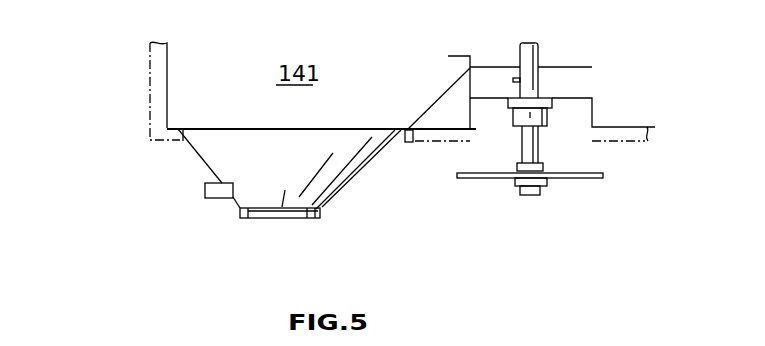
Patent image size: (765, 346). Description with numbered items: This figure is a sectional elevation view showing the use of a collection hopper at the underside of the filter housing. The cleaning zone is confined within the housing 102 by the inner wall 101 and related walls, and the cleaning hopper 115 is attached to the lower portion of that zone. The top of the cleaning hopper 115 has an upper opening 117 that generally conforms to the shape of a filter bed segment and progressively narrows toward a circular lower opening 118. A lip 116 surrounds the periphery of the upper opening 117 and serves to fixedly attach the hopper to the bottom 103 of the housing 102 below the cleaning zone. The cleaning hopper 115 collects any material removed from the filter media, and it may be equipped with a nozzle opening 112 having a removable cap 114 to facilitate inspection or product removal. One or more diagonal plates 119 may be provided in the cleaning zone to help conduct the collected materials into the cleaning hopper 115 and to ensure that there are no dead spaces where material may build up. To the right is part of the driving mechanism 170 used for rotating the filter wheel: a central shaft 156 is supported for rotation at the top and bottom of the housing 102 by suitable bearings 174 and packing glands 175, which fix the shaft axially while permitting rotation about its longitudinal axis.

The inner wall 101 is at (466, 64).
The housing 102 is at (168, 74).
The bottom of the housing 103 is at (156, 92).
The nozzle opening 112 is at (220, 198).
The removable cap 114 is at (205, 190).
The cleaning hopper 115 is at (350, 180).
The lip 116 is at (185, 142).
The upper opening 117 is at (260, 128).
The circular lower opening 118 is at (302, 218).
The diagonal plate 119 is at (428, 108).
The central shaft 156 is at (520, 147).
The driving mechanism 170 is at (537, 208).
The bearing 174 is at (550, 124).
The packing gland 175 is at (540, 80).